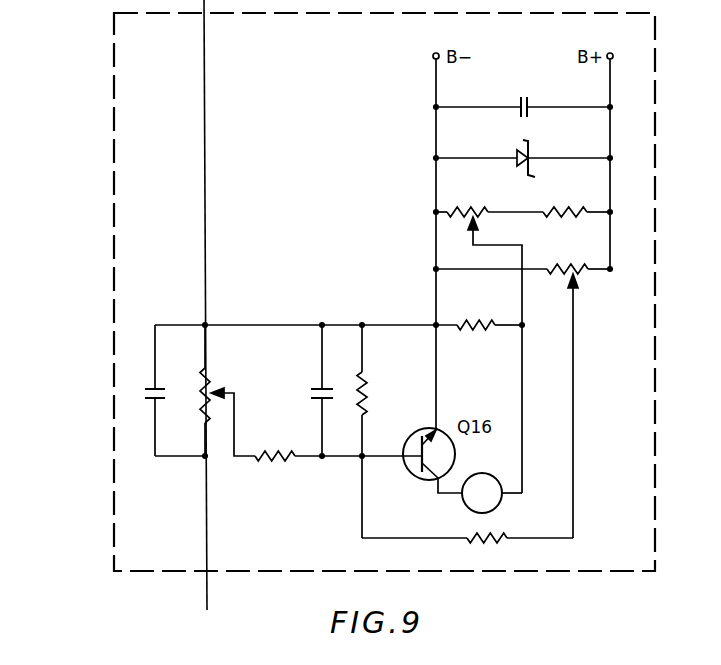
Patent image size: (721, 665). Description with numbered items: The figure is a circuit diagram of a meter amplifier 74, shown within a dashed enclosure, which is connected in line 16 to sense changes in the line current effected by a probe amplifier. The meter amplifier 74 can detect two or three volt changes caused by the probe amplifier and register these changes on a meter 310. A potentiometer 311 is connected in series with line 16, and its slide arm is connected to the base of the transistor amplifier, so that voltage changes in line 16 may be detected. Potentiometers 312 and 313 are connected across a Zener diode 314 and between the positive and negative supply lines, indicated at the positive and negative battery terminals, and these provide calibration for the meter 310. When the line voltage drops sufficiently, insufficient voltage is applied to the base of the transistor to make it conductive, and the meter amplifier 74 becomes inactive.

The line 16 is at (205, 141).
The meter amplifier 74 is at (105, 247).
The meter 310 is at (463, 500).
The potentiometer 311 is at (208, 383).
The potentiometer 312 is at (473, 206).
The potentiometer 313 is at (575, 248).
The Zener diode 314 is at (523, 150).